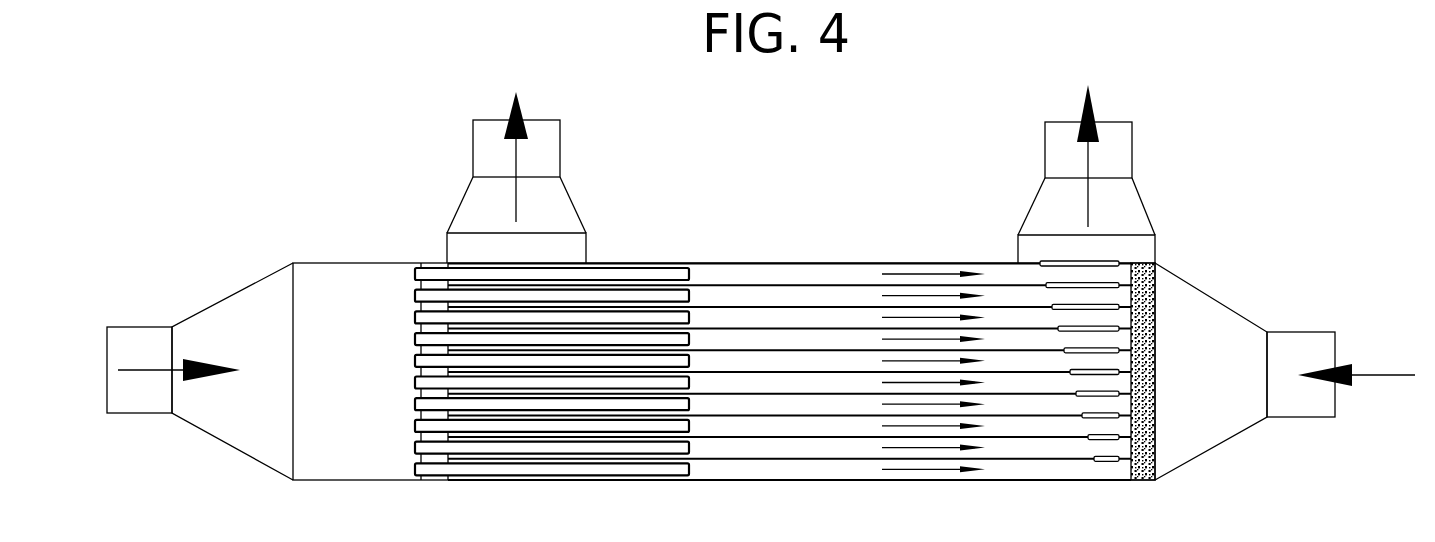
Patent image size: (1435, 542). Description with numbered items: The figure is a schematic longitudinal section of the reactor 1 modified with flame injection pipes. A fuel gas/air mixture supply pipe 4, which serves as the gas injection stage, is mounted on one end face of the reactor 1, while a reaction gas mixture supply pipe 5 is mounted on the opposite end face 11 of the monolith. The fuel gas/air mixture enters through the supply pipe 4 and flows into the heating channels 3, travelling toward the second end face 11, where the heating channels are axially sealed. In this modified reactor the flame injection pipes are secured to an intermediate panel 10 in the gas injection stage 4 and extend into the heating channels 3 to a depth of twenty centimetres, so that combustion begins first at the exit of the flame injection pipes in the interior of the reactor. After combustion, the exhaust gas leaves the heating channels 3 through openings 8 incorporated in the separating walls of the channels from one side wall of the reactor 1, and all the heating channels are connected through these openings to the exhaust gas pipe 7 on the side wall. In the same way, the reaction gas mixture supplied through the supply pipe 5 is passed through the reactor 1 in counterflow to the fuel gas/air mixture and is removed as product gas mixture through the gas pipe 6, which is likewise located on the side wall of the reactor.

The reactor 1 is at (760, 263).
The heating channels 3 is at (803, 338).
The fuel gas/air mixture supply pipe 4 is at (245, 423).
The reaction gas mixture supply pipe 5 is at (1218, 427).
The gas pipe 6 is at (567, 210).
The exhaust gas pipe 7 is at (1048, 203).
The openings 8 is at (1092, 397).
The intermediate panel 10 is at (418, 414).
The end face 11 is at (418, 379).